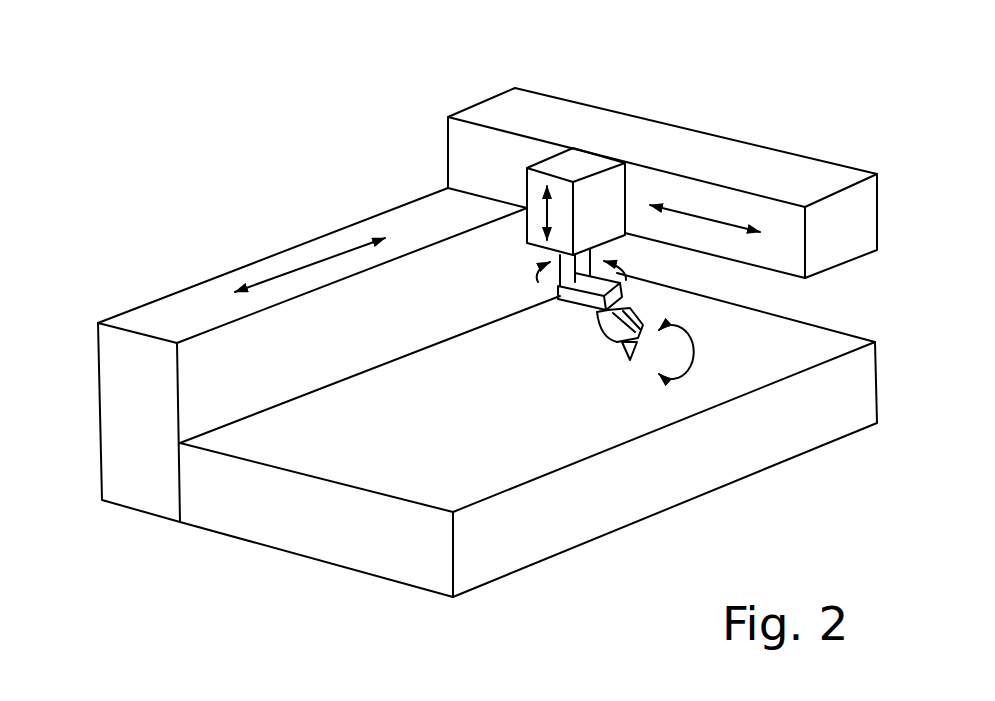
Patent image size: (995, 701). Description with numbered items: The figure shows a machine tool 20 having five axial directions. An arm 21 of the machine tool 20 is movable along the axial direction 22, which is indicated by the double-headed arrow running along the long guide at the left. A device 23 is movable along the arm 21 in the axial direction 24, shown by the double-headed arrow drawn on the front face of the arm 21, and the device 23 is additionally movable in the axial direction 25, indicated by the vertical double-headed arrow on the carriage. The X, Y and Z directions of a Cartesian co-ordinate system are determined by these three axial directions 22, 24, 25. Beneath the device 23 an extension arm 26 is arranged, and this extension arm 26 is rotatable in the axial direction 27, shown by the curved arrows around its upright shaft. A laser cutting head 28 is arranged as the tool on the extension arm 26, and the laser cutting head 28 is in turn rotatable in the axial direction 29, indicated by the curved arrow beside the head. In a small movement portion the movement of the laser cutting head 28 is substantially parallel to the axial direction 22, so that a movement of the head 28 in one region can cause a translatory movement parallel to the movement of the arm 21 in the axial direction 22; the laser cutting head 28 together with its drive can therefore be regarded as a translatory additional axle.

The machine tool 20 is at (307, 537).
The arm 21 is at (650, 140).
The axial direction 22 is at (317, 262).
The device 23 is at (547, 283).
The axial direction 24 is at (702, 215).
The axial direction 25 is at (545, 212).
The extension arm 26 is at (563, 298).
The axial direction 27 is at (588, 312).
The laser cutting head 28 is at (618, 326).
The axial direction 29 is at (694, 348).